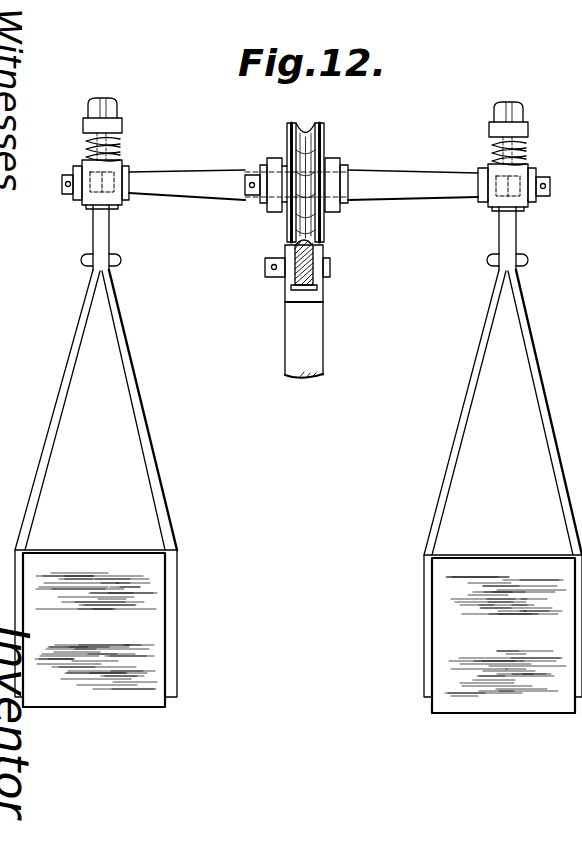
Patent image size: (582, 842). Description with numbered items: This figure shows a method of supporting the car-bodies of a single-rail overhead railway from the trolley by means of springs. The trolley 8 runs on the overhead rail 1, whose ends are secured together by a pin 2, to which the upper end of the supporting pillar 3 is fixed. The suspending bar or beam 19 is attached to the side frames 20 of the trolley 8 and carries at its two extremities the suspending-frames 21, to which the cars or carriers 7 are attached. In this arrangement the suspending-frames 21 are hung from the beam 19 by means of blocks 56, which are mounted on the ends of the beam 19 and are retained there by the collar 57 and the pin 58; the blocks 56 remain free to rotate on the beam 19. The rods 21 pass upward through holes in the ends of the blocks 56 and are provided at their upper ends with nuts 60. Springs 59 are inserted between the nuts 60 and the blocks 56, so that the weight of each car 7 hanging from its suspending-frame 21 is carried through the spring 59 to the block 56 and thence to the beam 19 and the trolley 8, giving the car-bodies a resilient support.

The overhead rail 1 is at (314, 258).
The pin 2 is at (270, 270).
The pillar 3 is at (307, 311).
The car 7 is at (298, 631).
The trolley 8 is at (320, 150).
The suspending bar or beam 19 is at (200, 188).
The side frames 20 is at (275, 165).
The suspending-frames 21 is at (148, 450).
The blocks 56 is at (124, 205).
The collar 57 is at (78, 202).
The pin 58 is at (68, 194).
The springs 59 is at (118, 148).
The nuts 60 is at (110, 112).